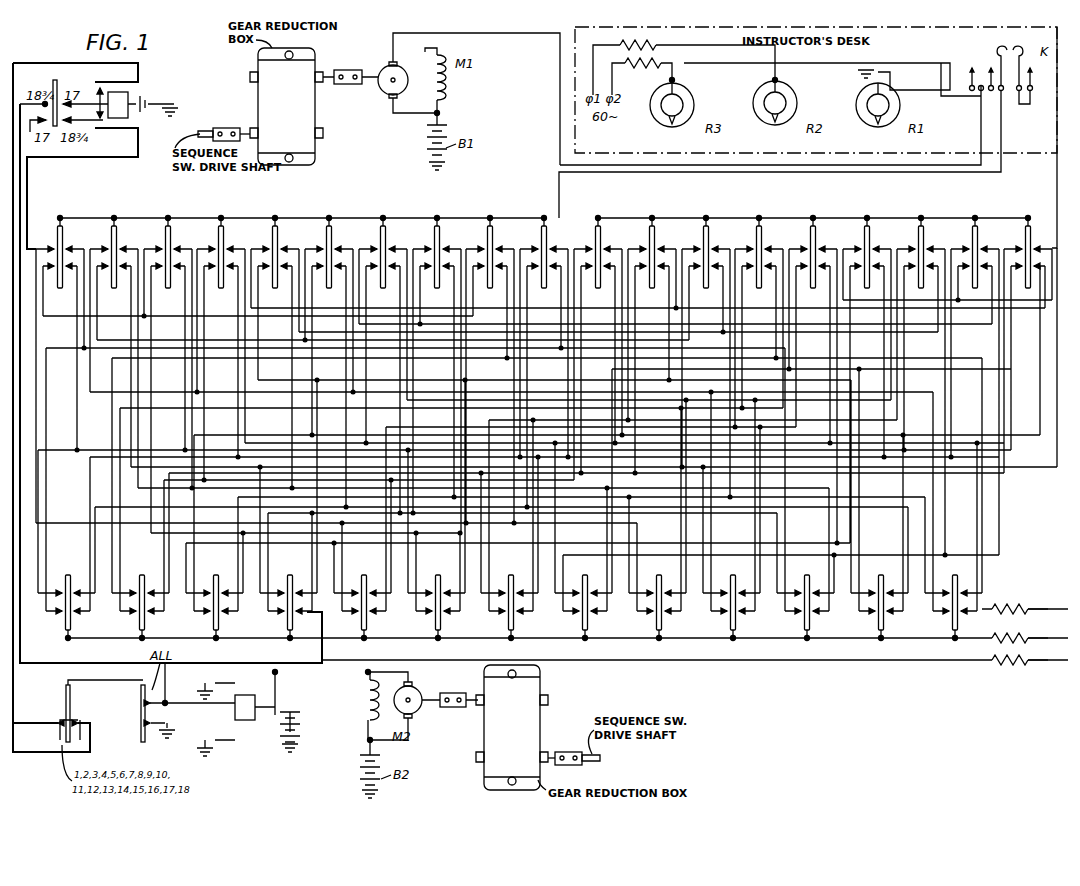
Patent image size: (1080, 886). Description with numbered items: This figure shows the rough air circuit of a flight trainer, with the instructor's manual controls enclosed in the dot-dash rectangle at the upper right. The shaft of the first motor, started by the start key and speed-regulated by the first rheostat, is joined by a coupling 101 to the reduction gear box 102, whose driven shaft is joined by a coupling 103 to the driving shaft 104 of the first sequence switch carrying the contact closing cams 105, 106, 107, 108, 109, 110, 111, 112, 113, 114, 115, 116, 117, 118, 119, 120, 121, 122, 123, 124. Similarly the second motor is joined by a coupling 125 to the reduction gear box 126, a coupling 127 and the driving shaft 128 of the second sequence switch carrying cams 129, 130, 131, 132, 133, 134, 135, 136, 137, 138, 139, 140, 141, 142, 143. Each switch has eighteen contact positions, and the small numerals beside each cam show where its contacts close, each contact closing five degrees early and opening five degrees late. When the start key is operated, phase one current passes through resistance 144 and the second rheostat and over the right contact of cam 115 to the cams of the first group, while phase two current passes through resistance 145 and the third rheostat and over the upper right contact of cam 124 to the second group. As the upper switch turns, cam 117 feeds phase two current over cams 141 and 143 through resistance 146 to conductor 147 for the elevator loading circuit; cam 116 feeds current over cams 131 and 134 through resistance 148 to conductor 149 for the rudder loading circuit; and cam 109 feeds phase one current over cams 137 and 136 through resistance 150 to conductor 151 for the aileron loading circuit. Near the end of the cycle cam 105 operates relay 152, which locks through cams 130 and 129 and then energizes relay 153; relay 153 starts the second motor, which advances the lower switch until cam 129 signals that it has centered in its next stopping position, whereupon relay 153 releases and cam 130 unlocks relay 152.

The coupling 101 is at (334, 70).
The reduction gear box 102 is at (315, 120).
The coupling 103 is at (240, 128).
The driving shaft 104 is at (205, 134).
The contact closing cam 105 is at (61, 131).
The contact closing cam 106 is at (60, 218).
The contact closing cam 107 is at (112, 222).
The contact closing cam 108 is at (179, 235).
The contact closing cam 109 is at (225, 243).
The contact closing cam 110 is at (290, 235).
The contact closing cam 111 is at (338, 235).
The contact closing cam 112 is at (394, 230).
The contact closing cam 113 is at (454, 236).
The contact closing cam 114 is at (494, 243).
The contact closing cam 115 is at (544, 243).
The contact closing cam 116 is at (603, 243).
The contact closing cam 117 is at (653, 243).
The contact closing cam 118 is at (693, 232).
The contact closing cam 119 is at (766, 236).
The contact closing cam 120 is at (829, 236).
The contact closing cam 121 is at (868, 243).
The contact closing cam 122 is at (931, 247).
The contact closing cam 123 is at (990, 236).
The contact closing cam 124 is at (1029, 243).
The coupling 125 is at (460, 693).
The reduction gear box 126 is at (484, 736).
The coupling 127 is at (576, 752).
The driving shaft 128 is at (600, 762).
The contact closing cam 129 is at (140, 691).
The contact closing cam 130 is at (66, 691).
The contact closing cam 131 is at (66, 634).
The contact closing cam 132 is at (140, 636).
The contact closing cam 133 is at (216, 636).
The contact closing cam 134 is at (290, 636).
The contact closing cam 135 is at (364, 638).
The contact closing cam 136 is at (438, 638).
The contact closing cam 137 is at (511, 638).
The contact closing cam 138 is at (585, 638).
The contact closing cam 139 is at (659, 638).
The contact closing cam 140 is at (733, 638).
The contact closing cam 141 is at (807, 638).
The contact closing cam 142 is at (881, 638).
The contact closing cam 143 is at (955, 638).
The resistance 144 is at (646, 45).
The resistance 145 is at (651, 63).
The resistance 146 is at (1012, 607).
The conductor 147 is at (1043, 619).
The resistance 148 is at (994, 672).
The conductor 149 is at (1043, 672).
The resistance 150 is at (994, 638).
The conductor 151 is at (1046, 646).
The relay 152 is at (124, 98).
The relay 153 is at (235, 712).